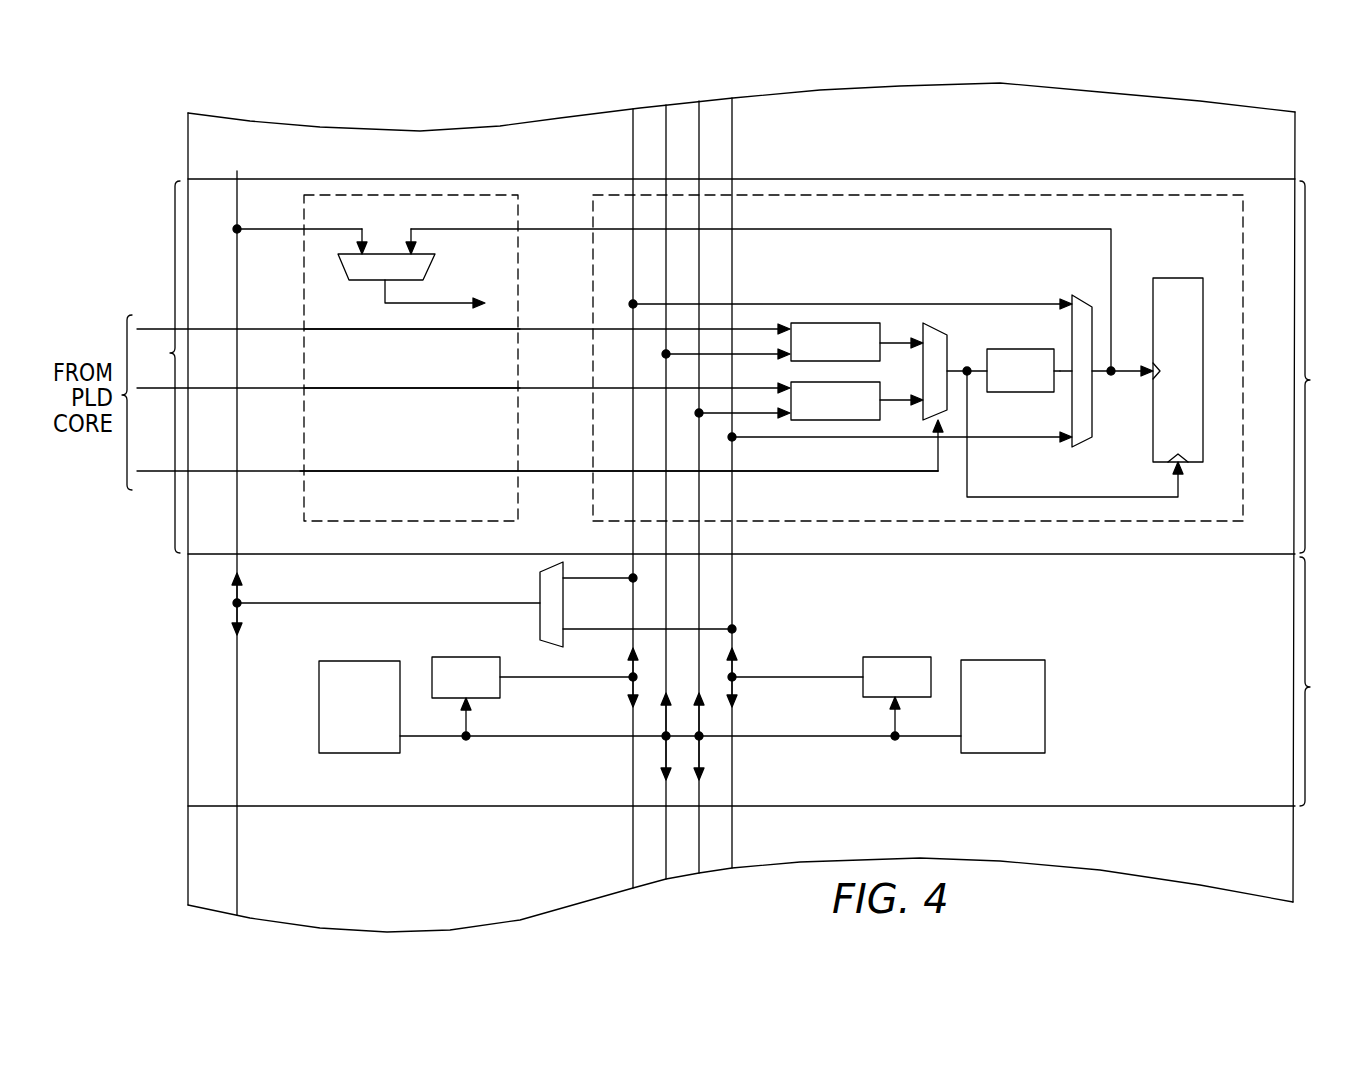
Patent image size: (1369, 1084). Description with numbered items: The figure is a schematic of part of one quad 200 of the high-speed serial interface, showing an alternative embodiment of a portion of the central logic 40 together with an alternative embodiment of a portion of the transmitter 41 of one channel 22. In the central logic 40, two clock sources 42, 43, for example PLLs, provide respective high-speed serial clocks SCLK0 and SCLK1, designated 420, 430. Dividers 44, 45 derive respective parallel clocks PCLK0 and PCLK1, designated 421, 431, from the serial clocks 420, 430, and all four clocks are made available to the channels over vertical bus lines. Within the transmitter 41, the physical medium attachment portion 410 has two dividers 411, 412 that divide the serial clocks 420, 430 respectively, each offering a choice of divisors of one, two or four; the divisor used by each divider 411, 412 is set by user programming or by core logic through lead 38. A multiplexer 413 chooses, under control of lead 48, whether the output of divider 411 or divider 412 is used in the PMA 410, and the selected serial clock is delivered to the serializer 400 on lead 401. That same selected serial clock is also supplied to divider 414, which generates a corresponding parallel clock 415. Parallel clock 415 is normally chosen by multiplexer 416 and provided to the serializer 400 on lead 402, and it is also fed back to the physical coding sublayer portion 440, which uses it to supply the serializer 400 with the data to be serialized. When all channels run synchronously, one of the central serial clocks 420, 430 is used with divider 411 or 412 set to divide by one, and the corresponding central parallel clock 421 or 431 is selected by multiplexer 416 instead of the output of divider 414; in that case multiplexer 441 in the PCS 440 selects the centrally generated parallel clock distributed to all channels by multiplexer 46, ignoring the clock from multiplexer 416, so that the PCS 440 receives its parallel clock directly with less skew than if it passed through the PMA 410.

The grouping 200 is at (150, 144).
The channel 22 is at (756, 367).
The central logic 40 is at (1320, 681).
The transmitter 41 is at (537, 397).
The lead 38 is at (468, 388).
The lead 48 is at (420, 471).
The physical coding sublayer portion 440 is at (472, 195).
The multiplexer 441 is at (436, 262).
The physical medium attachment portion 410 is at (1190, 195).
The divider 412 is at (813, 323).
The divider 411 is at (818, 420).
The multiplexer 413 is at (948, 336).
The divider 414 is at (1005, 392).
The parallel clock 415 is at (1062, 368).
The multiplexer 416 is at (1072, 295).
The lead 402 is at (1100, 377).
The lead 401 is at (1067, 497).
The serializer 400 is at (1185, 278).
The multiplexer 46 is at (540, 590).
The clock source 43 is at (319, 676).
The divider 45 is at (432, 675).
The parallel clock 431 is at (550, 676).
The serial clock 430 is at (533, 737).
The parallel clock 421 is at (810, 677).
The serial clock 420 is at (790, 737).
The divider 44 is at (931, 662).
The clock source 42 is at (1045, 668).